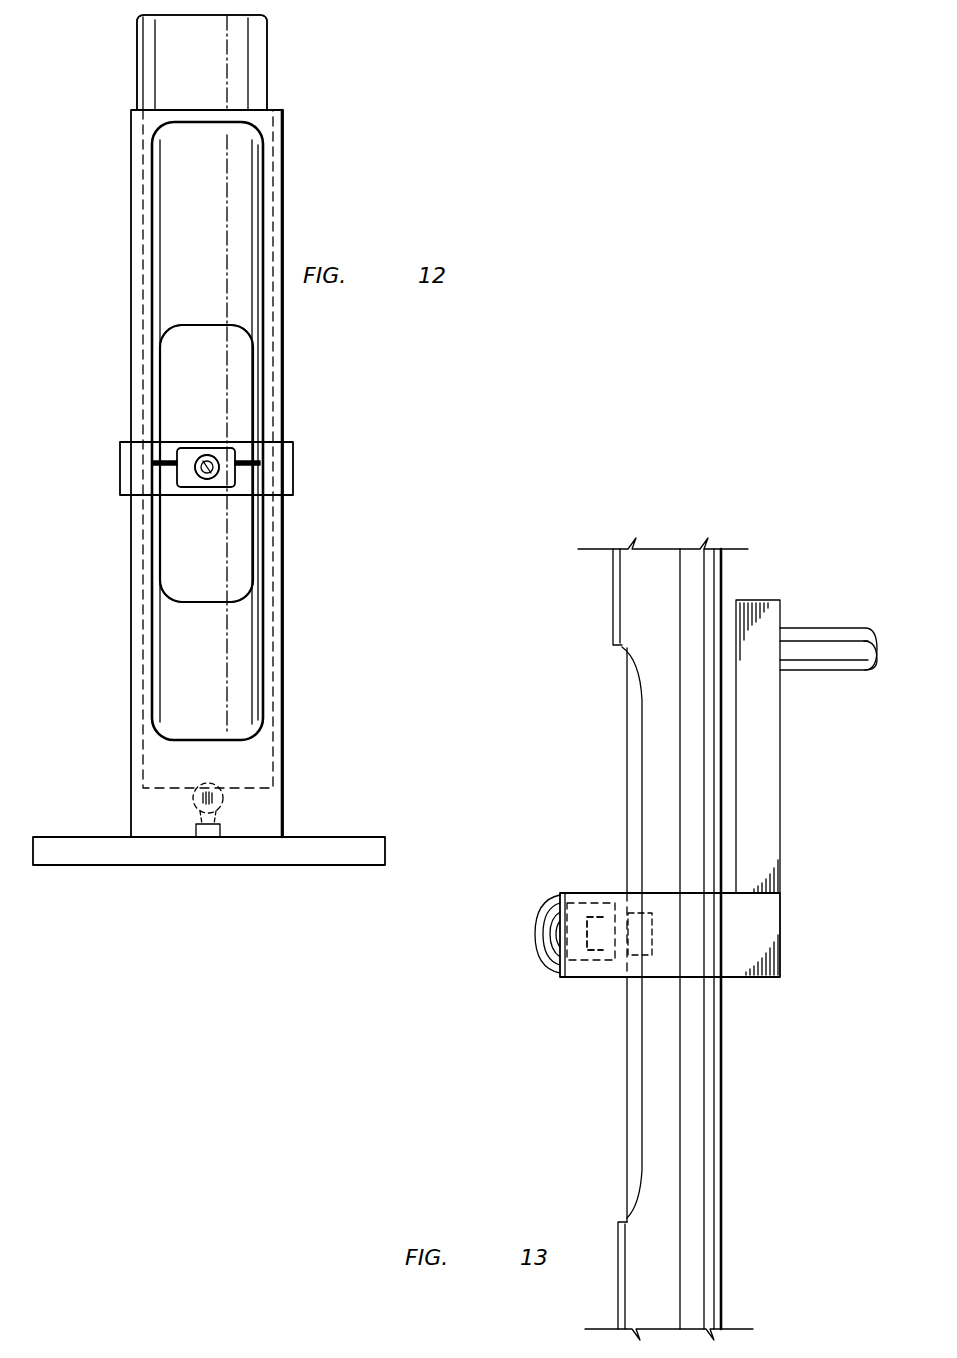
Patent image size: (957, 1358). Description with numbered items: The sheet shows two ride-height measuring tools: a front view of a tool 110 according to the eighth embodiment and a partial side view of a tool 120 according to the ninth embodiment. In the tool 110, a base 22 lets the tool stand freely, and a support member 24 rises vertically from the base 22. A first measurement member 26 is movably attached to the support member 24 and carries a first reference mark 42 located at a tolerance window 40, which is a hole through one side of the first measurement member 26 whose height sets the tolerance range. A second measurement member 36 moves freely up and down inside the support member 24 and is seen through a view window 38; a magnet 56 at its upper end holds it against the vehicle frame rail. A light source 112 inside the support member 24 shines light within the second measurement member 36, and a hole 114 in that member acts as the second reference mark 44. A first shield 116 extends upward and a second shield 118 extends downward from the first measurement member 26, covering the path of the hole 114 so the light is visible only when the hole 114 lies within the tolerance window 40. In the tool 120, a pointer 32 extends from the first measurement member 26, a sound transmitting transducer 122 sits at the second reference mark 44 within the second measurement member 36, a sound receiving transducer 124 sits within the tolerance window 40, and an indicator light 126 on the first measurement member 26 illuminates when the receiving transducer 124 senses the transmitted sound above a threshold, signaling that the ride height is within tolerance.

In FIG. 12, the base 22 is at (338, 836).
In FIG. 12, the support member 24 is at (284, 200).
In FIG. 13, the support member 24 is at (612, 600).
In FIG. 12, the first measurement member 26 is at (294, 470).
In FIG. 13, the first measurement member 26 is at (782, 960).
In FIG. 13, the pointer 32 is at (830, 628).
In FIG. 12, the second measurement member 36 is at (275, 70).
In FIG. 13, the second measurement member 36 is at (626, 792).
In FIG. 12, the view window 38 is at (153, 180).
In FIG. 13, the view window 38 is at (640, 735).
In FIG. 12, the tolerance window 40 is at (233, 470).
In FIG. 13, the tolerance window 40 is at (600, 976).
In FIG. 12, the first reference mark 42 is at (165, 463).
In FIG. 12, the second reference mark 44 is at (195, 473).
In FIG. 13, the second reference mark 44 is at (650, 945).
In FIG. 12, the magnet 56 is at (270, 18).
In FIG. 12, the tool 110 is at (102, 632).
In FIG. 12, the light source 112 is at (212, 787).
In FIG. 12, the hole 114 is at (206, 460).
In FIG. 12, the first shield 116 is at (206, 463).
In FIG. 12, the second shield 118 is at (206, 463).
In FIG. 13, the tool 120 is at (790, 566).
In FIG. 13, the sound transmitting transducer 122 is at (655, 920).
In FIG. 13, the sound receiving transducer 124 is at (600, 905).
In FIG. 13, the indicator light 126 is at (545, 960).